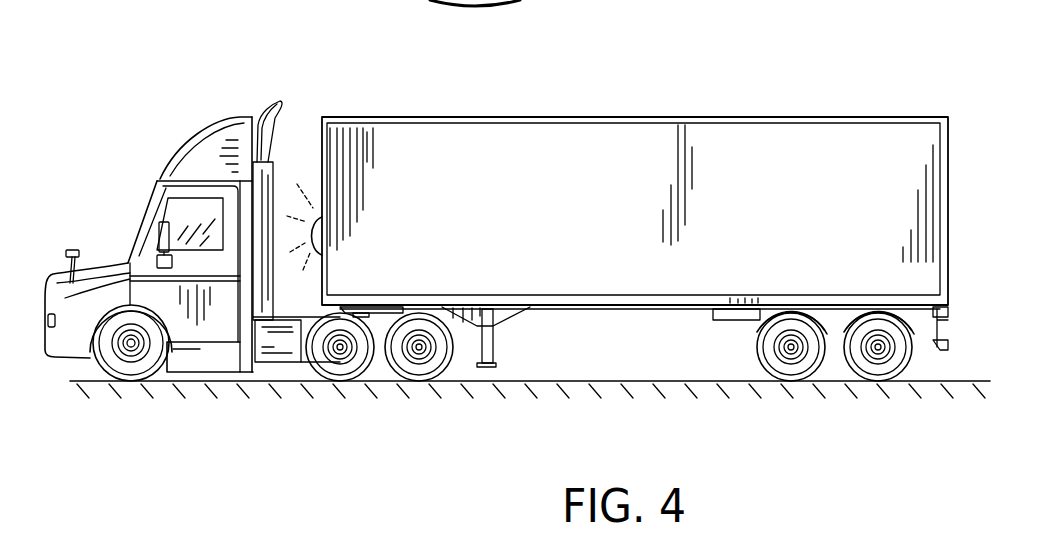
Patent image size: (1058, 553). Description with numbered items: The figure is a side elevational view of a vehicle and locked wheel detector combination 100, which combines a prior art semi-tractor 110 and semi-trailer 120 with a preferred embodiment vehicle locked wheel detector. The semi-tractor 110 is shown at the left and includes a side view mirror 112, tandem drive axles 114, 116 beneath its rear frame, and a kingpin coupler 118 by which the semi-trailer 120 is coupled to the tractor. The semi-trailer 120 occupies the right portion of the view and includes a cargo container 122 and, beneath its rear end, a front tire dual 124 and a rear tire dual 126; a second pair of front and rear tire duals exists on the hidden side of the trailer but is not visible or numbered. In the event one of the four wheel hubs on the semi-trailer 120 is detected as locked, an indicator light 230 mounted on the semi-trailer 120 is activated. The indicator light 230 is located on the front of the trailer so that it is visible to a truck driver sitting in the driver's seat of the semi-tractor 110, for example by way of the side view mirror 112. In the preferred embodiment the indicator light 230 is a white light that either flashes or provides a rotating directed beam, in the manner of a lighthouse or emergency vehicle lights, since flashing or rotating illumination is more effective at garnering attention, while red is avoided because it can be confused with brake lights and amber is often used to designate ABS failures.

The vehicle and locked wheel detector combination 100 is at (205, 76).
The semi-tractor 110 is at (156, 165).
The side view mirror 112 is at (160, 243).
The tandem drive axle 114 is at (331, 377).
The tandem drive axle 116 is at (411, 376).
The kingpin coupler 118 is at (373, 309).
The semi-trailer 120 is at (537, 104).
The cargo container 122 is at (630, 149).
The front tire dual 124 is at (756, 357).
The rear tire dual 126 is at (871, 376).
The indicator light 230 is at (322, 216).